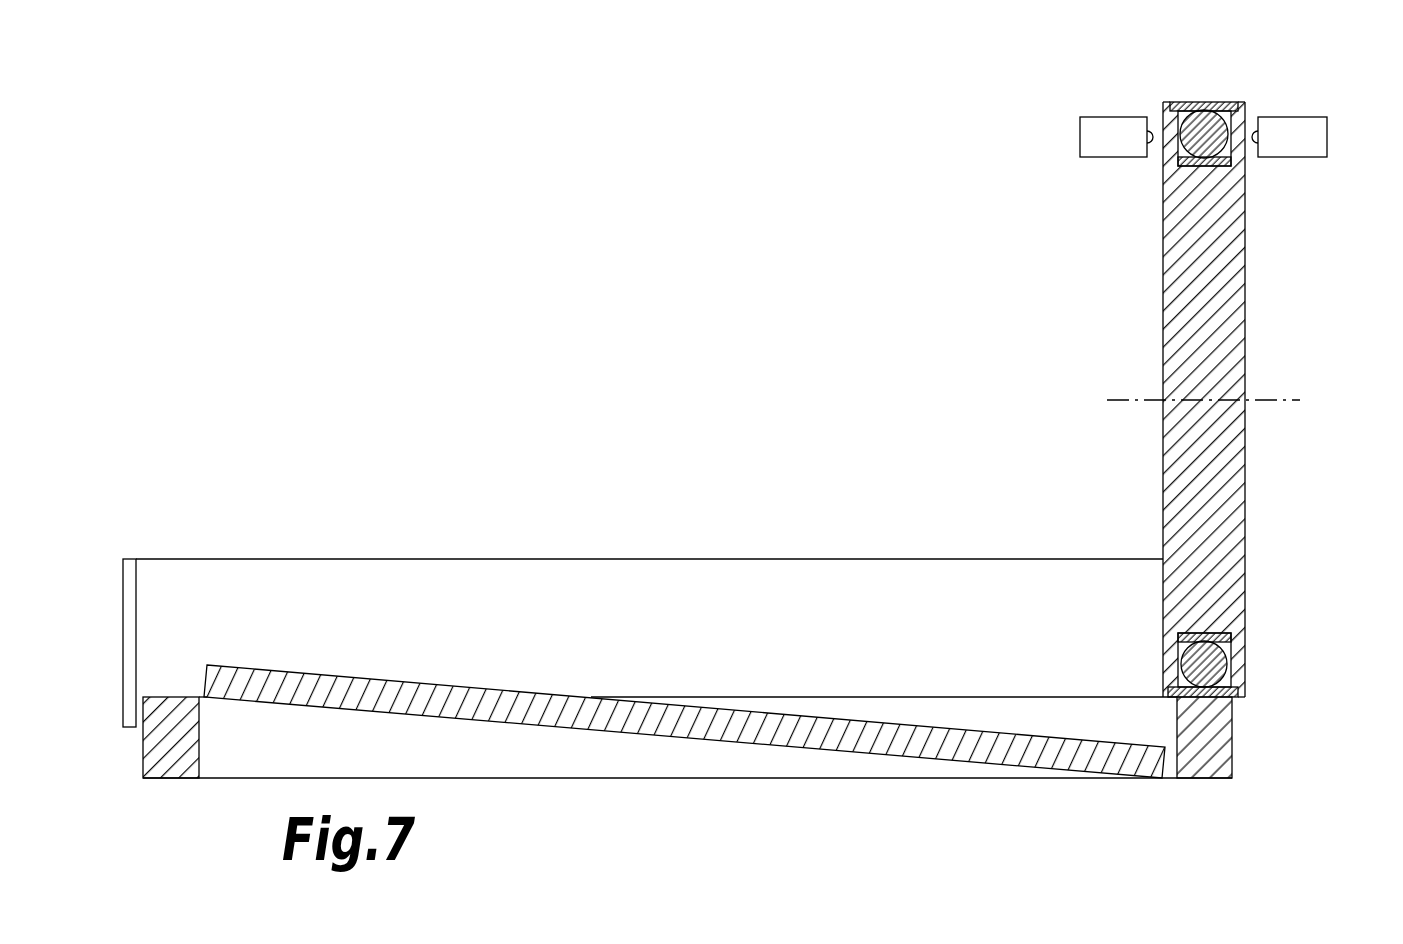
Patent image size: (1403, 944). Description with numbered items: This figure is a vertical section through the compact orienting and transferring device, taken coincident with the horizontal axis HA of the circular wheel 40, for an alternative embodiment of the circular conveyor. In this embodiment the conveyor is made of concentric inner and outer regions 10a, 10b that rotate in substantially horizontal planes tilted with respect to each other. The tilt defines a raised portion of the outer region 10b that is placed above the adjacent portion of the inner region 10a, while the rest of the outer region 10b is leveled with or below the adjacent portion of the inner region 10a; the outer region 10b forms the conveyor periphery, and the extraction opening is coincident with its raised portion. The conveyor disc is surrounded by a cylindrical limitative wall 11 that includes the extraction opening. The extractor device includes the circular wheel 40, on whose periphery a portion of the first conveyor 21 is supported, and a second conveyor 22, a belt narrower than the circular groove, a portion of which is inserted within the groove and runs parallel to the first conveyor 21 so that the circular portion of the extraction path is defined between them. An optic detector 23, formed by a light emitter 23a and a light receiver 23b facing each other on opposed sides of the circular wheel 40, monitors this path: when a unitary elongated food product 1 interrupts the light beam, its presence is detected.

The unitary elongated food product 1 is at (1205, 126).
The first conveyor 21 is at (1185, 103).
The second conveyor 22 is at (1213, 116).
The optic detector 23 is at (1221, 367).
The light emitter 23a is at (1103, 193).
The light receiver 23b is at (1289, 137).
The circular wheel 40 is at (1192, 400).
The hinge axis HA is at (1107, 400).
The cylindrical limitative wall 11 is at (137, 583).
The inner region 10a is at (755, 710).
The outer region 10b is at (172, 697).